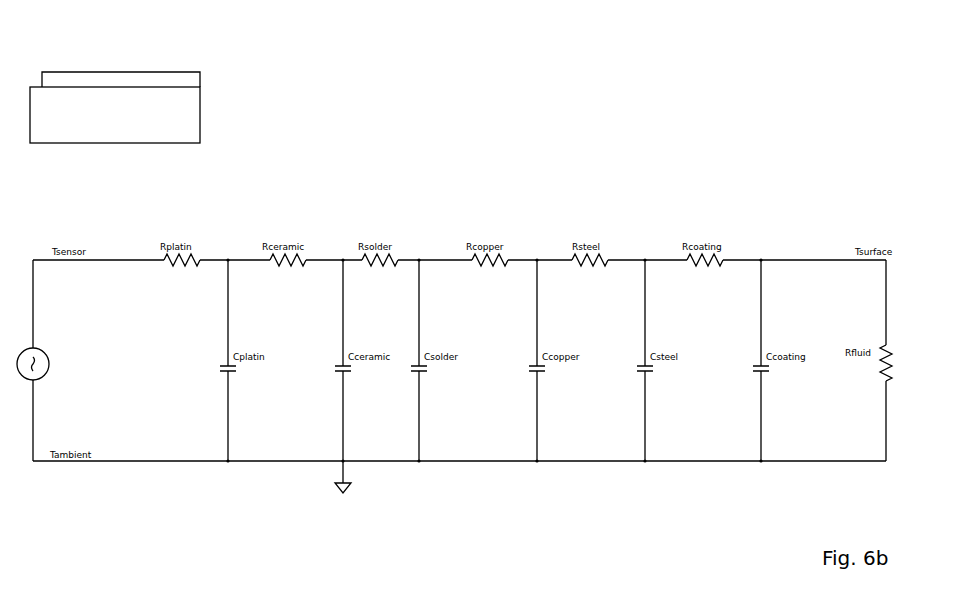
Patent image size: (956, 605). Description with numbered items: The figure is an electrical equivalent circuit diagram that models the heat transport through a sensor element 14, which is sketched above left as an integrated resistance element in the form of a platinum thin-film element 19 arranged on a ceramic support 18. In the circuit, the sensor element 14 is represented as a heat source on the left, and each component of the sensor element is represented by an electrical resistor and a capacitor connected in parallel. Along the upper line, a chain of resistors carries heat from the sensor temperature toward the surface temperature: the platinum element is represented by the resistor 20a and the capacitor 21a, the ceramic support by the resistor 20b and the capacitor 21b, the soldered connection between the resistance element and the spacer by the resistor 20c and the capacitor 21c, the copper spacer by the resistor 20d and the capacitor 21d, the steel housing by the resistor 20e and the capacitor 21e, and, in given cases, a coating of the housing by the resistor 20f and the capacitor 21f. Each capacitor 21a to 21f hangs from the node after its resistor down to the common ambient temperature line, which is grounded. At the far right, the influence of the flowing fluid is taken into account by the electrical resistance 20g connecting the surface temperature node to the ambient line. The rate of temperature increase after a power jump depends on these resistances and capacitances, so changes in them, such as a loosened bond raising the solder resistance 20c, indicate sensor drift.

The sensor element 14 is at (120, 392).
The ceramic support 18 is at (115, 115).
The platinum thin-film element 19 is at (123, 74).
The electrical resistor 20a is at (182, 234).
The electrical resistor 20b is at (262, 228).
The electrical resistor 20c is at (380, 228).
The electrical resistor 20d is at (472, 224).
The electrical resistor 20e is at (585, 229).
The electrical resistor 20f is at (714, 228).
The electrical resistance 20g is at (869, 339).
The capacitor 21a is at (214, 350).
The capacitor 21b is at (334, 350).
The capacitor 21c is at (414, 350).
The capacitor 21d is at (524, 353).
The capacitor 21e is at (639, 353).
The capacitor 21f is at (744, 353).